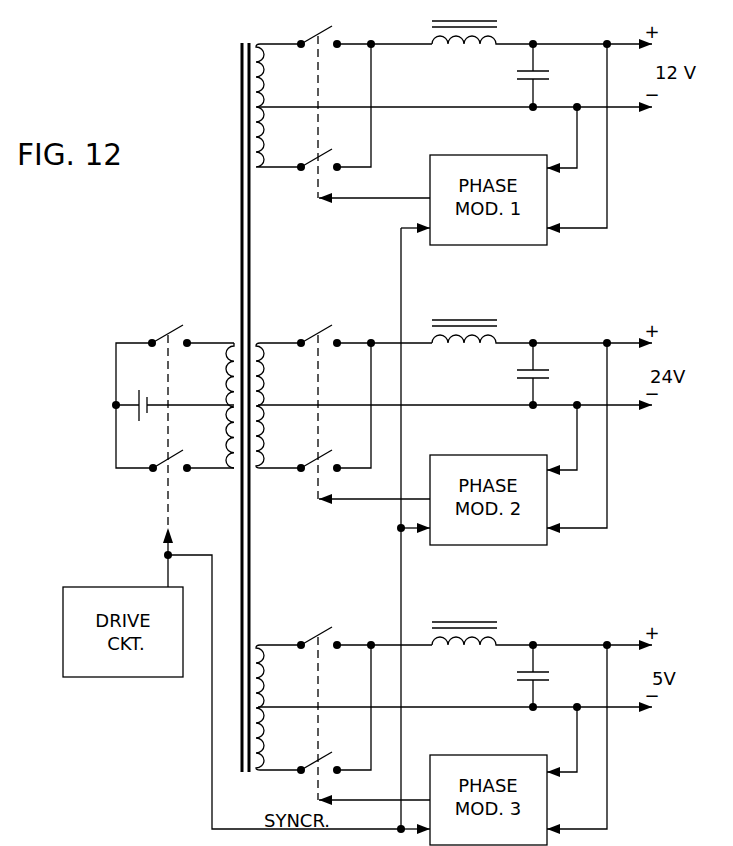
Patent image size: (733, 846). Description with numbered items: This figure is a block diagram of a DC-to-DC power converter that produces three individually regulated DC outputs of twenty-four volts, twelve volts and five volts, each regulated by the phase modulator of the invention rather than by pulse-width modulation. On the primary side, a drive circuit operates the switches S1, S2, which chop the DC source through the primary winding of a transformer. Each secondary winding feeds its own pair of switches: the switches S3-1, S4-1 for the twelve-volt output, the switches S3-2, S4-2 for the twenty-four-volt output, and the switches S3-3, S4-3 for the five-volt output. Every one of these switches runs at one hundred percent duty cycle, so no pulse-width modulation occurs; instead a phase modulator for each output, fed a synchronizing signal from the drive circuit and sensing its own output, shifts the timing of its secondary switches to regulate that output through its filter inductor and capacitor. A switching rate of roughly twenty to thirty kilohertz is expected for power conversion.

The switch S1 is at (163, 333).
The switch S2 is at (163, 473).
The switch S3-1 is at (304, 32).
The switch S4-1 is at (303, 172).
The switch S3-2 is at (304, 332).
The switch S4-2 is at (303, 474).
The switch S3-3 is at (305, 631).
The switch S4-3 is at (302, 776).